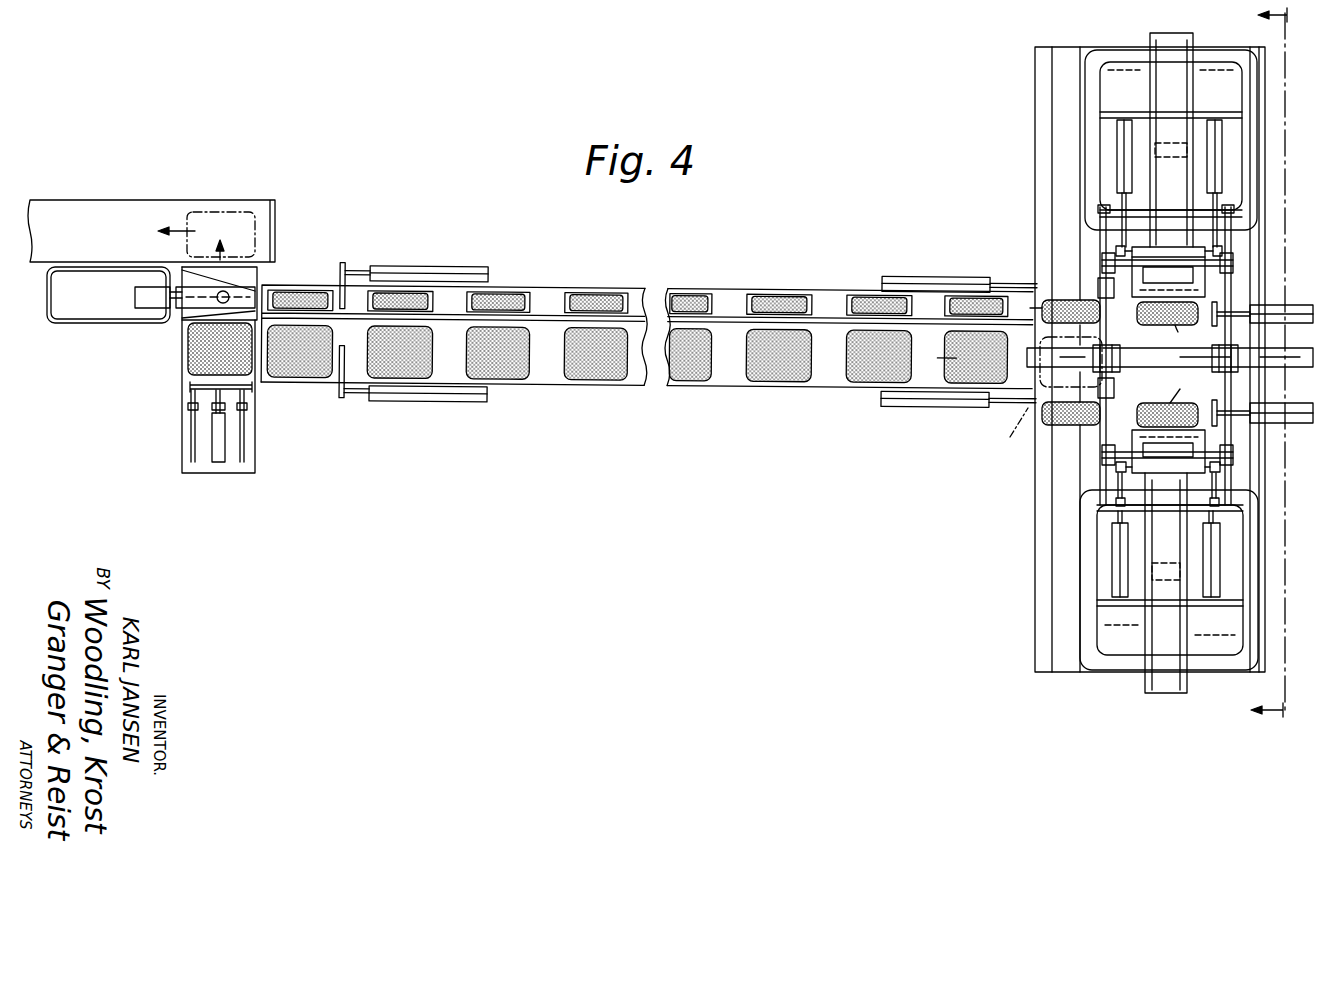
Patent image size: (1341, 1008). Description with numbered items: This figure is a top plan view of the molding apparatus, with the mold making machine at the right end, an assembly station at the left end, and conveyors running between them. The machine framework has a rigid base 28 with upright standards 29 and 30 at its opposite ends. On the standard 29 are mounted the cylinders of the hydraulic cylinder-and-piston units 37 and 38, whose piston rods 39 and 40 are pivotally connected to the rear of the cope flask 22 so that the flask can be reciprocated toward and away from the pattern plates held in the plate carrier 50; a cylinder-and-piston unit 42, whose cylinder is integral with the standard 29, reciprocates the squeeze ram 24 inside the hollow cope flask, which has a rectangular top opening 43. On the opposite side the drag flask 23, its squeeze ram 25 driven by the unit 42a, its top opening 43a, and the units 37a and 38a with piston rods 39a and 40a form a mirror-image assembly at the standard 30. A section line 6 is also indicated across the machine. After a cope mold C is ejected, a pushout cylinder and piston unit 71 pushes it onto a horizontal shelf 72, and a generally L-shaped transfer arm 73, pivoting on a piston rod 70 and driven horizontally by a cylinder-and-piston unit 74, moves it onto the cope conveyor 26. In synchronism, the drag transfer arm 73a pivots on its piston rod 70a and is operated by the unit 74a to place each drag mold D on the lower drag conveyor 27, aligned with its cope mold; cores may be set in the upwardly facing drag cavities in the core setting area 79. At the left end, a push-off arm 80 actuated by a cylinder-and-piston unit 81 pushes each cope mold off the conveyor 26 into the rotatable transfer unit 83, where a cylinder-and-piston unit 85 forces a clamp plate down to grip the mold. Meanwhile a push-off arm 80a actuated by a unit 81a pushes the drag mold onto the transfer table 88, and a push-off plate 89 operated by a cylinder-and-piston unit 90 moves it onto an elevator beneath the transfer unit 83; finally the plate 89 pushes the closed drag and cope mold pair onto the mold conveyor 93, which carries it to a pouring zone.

The mold conveyor 93 is at (275, 218).
The cylinder-and-piston unit 85 is at (232, 292).
The rotatable transfer unit 83 is at (158, 330).
The transfer table 88 is at (255, 428).
The push-off plate 89 is at (190, 387).
The cylinder-and-piston unit 90 is at (205, 465).
The cope conveyor 26 is at (828, 293).
The drag mold conveyor 27 is at (823, 382).
The core setting area 79 is at (615, 372).
The push-off arm 80 is at (347, 262).
The cylinder-and-piston unit 81 is at (417, 265).
The push-off arm 80a is at (338, 383).
The cylinder-and-piston unit 81a is at (432, 400).
The cylinder-and-piston unit 74 is at (913, 271).
The piston rod 70 is at (1007, 277).
The cylinder-and-piston unit 74a is at (911, 400).
The piston rod 70a is at (1002, 396).
The section line 6- 6 is at (1255, 365).
The horizontal shelf 72 is at (1032, 218).
The rigid base 28 is at (1253, 460).
The upright standard 29 is at (1092, 183).
The hydraulic cylinder-and-piston unit 42 is at (1138, 176).
The hydraulic cylinder-and-piston unit 38 is at (1107, 146).
The hydraulic cylinder-and-piston unit 37 is at (1240, 143).
The piston rod 39 is at (1217, 200).
The piston rod 40 is at (1120, 230).
The transfer arm 73 is at (1100, 287).
The transfer arm 73a is at (1110, 389).
The squeeze ram 24 is at (1104, 263).
The cope flask 22 is at (1205, 285).
The rectangular top opening 43 is at (1222, 260).
The plate carrier 50 is at (1297, 367).
The pushout cylinder and piston unit 71 is at (1297, 323).
The drag flask 23 is at (1108, 443).
The squeeze ram 25 is at (1120, 465).
The rectangular top opening 43a is at (1205, 453).
The upright standard 30 is at (1088, 587).
The piston rod 40a is at (1120, 513).
The hydraulic cylinder-and-piston unit 38a is at (1098, 563).
The hydraulic cylinder-and-piston unit 37a is at (1234, 562).
The piston rod 39a is at (1220, 520).
The hydraulic cylinder-and-piston unit 42a is at (1190, 500).